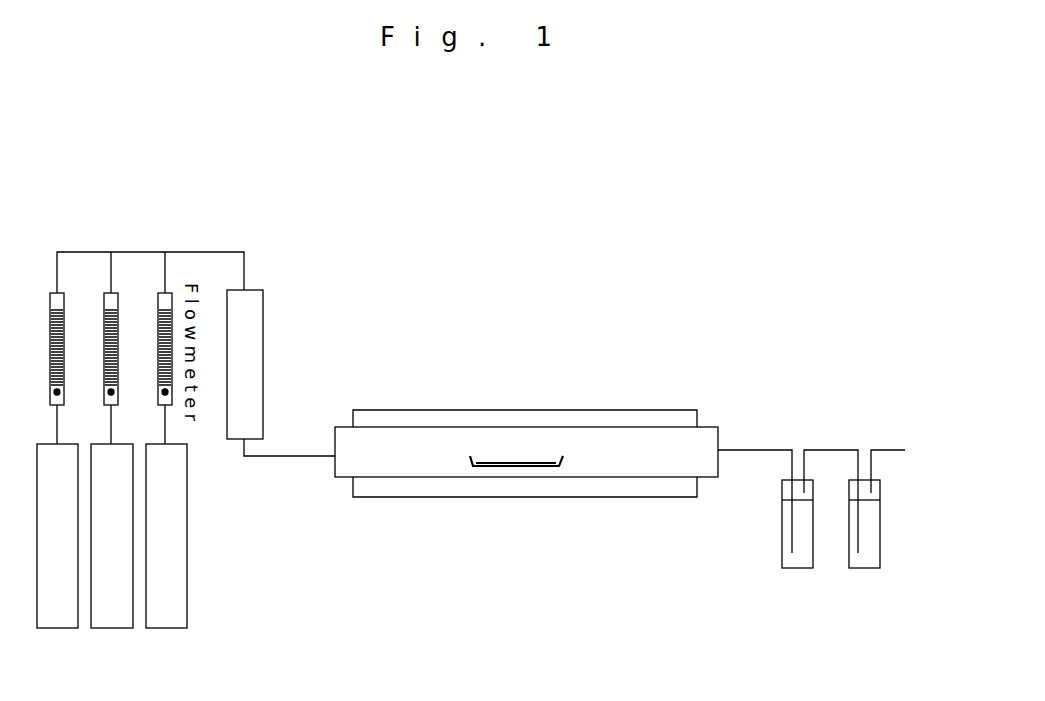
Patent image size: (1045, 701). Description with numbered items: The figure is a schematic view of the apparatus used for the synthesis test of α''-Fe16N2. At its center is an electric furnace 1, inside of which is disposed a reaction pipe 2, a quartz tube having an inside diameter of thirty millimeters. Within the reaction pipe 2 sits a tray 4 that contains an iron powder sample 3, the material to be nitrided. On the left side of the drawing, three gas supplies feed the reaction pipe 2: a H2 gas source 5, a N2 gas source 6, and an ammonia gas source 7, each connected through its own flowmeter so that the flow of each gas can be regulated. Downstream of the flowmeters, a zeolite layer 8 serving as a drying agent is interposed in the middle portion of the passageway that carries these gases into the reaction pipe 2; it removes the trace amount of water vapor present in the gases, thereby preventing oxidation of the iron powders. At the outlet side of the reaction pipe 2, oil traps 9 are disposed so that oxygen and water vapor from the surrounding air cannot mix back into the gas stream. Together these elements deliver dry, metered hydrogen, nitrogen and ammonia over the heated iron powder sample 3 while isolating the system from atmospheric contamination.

The electric furnace 1 is at (660, 410).
The reaction pipe 2 is at (588, 447).
The iron powder sample 3 is at (493, 457).
The tray 4 is at (481, 467).
The H2 gas source 5 is at (65, 622).
The N2 gas source 6 is at (118, 622).
The ammonia gas source 7 is at (173, 622).
The zeolite layer 8 is at (263, 346).
The oil traps 9 is at (782, 517).